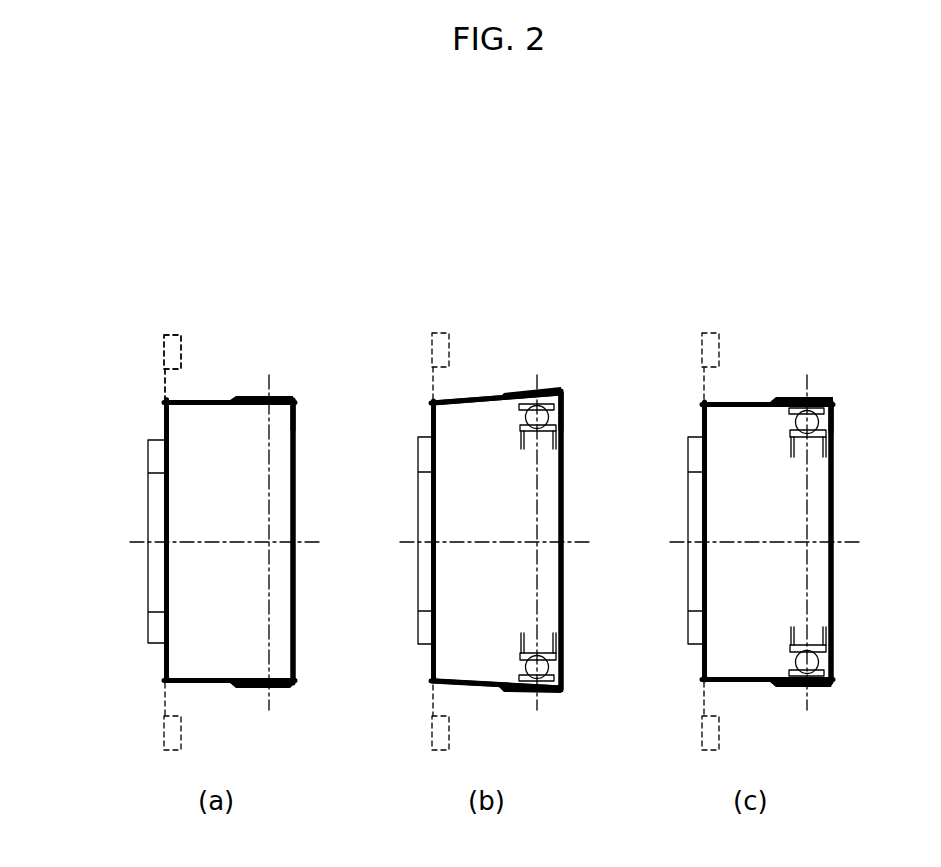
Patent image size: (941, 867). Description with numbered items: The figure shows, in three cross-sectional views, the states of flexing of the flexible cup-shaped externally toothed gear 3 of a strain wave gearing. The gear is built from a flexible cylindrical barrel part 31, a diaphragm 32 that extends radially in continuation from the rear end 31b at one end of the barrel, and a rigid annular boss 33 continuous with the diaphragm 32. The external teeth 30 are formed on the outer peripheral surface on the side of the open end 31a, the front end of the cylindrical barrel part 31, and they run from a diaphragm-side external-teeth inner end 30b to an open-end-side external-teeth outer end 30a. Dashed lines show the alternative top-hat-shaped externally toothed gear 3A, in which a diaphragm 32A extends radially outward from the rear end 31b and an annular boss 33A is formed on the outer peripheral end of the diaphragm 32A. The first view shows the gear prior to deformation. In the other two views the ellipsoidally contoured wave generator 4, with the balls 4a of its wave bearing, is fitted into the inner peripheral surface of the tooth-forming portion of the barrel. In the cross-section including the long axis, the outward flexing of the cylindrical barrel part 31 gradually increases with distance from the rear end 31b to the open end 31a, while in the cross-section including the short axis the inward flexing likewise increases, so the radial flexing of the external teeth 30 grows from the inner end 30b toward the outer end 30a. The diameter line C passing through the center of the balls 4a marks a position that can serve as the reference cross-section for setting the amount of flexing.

The externally toothed gear 3 is at (192, 327).
The top-hat-shaped externally toothed gear 3A is at (470, 485).
The external teeth 30 is at (277, 397).
The external-teeth outer end 30a is at (291, 397).
The external-teeth inner end 30b is at (238, 397).
The cylindrical barrel part 31 is at (200, 407).
The open end 31a is at (296, 401).
The rear end 31b is at (163, 402).
The diaphragm 32 is at (160, 418).
The diaphragm 32A is at (160, 390).
The annular boss 33 is at (150, 452).
The annular boss 33A is at (163, 380).
The diameter line C is at (270, 480).
The wave generator 4 is at (561, 441).
The balls 4a is at (546, 414).